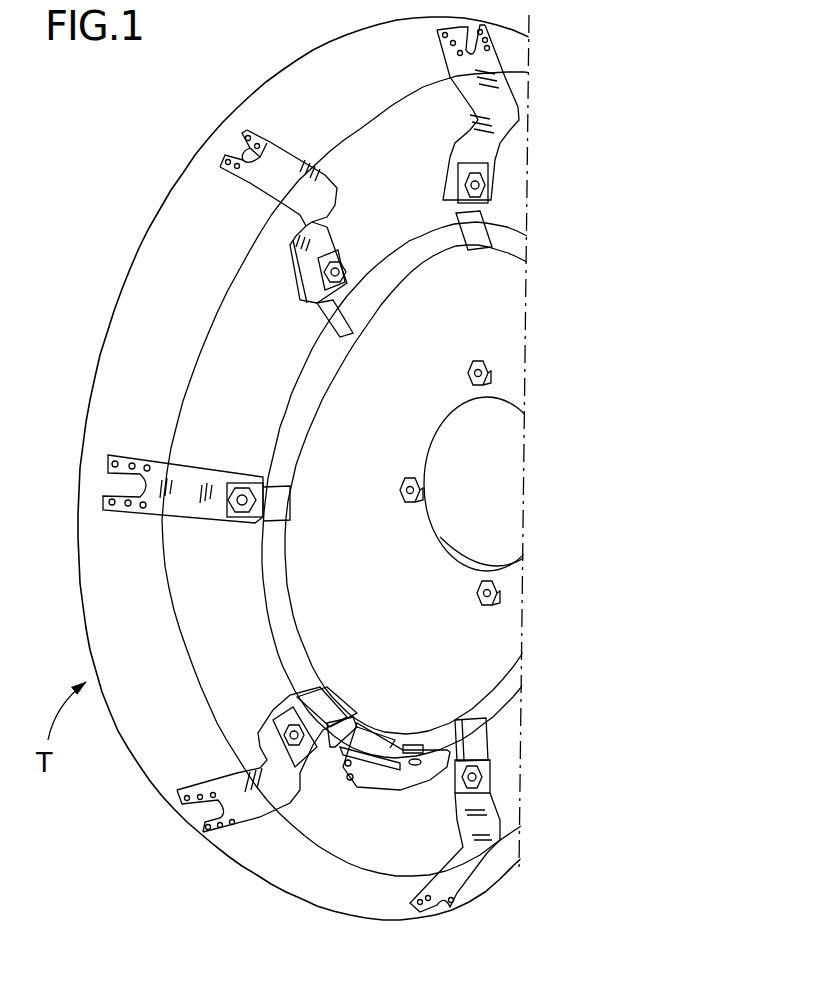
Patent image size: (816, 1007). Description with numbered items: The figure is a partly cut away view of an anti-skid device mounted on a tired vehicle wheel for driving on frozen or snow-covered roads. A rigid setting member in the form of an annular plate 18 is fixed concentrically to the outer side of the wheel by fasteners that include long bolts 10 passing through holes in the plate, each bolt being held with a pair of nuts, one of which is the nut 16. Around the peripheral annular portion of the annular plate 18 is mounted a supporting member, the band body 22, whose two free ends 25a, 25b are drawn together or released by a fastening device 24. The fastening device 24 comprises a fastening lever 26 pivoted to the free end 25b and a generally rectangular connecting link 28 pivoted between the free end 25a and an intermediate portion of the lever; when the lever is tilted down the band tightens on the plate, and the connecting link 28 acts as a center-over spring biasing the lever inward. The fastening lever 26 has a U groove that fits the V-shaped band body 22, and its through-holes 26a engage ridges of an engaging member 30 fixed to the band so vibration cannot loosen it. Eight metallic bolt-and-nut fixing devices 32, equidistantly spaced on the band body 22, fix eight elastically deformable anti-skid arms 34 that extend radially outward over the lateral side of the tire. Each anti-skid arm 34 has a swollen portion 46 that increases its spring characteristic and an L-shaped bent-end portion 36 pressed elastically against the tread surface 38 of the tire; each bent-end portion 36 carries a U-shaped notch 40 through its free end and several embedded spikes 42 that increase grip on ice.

The long bolt 10 is at (490, 383).
The nut 16 is at (492, 371).
The annular plate 18 is at (512, 312).
The band body 22 is at (293, 421).
The fastening device 24 is at (375, 800).
The free end 25a is at (350, 713).
The free end 25b is at (390, 735).
The fastening lever 26 is at (420, 778).
The through-hole 26a is at (413, 747).
The connecting link 28 is at (368, 748).
The engaging member 30 is at (423, 748).
The fixing device 32 is at (507, 233).
The anti-skid arm 34 is at (512, 88).
The bent-end portion 36 is at (262, 140).
The tread surface 38 is at (158, 250).
The U-shaped notch 40 is at (232, 153).
The spike 42 is at (250, 130).
The swollen portion 46 is at (326, 196).